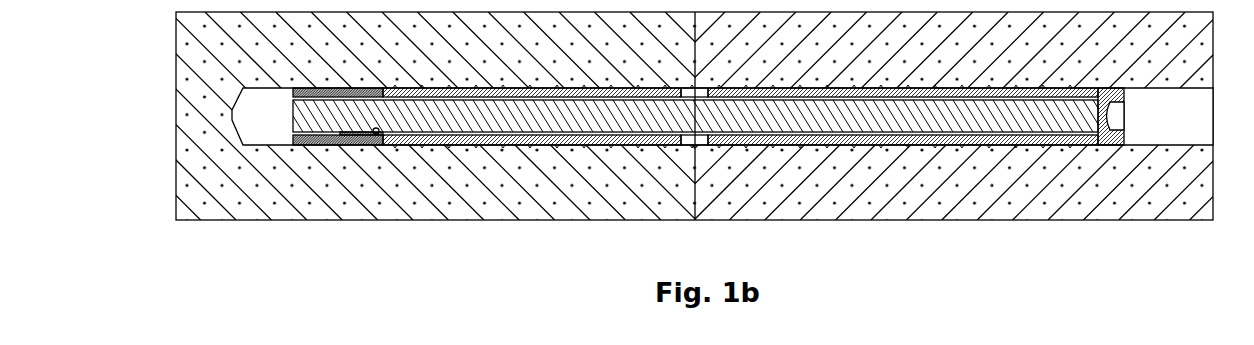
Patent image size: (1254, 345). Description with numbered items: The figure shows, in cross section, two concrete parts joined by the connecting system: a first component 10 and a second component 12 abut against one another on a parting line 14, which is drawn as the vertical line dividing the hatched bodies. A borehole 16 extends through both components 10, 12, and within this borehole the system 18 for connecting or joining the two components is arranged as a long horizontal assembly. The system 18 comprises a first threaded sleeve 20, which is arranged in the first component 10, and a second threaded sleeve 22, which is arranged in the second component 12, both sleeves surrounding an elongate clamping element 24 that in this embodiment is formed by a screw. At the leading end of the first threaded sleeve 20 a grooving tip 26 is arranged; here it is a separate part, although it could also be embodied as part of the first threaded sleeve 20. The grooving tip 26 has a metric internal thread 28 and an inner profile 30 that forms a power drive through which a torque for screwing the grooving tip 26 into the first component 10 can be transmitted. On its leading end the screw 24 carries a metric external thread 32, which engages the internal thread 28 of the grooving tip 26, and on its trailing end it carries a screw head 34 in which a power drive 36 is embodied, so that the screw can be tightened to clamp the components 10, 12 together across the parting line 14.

The first component 10 is at (188, 72).
The second component 12 is at (1212, 184).
The parting line 14 is at (703, 18).
The borehole 16 is at (262, 100).
The system 18 is at (634, 65).
The first threaded sleeve 20 is at (394, 82).
The second threaded sleeve 22 is at (850, 85).
The clamping element 24 is at (928, 118).
The grooving tip 26 is at (333, 80).
The metric internal thread 28 is at (308, 132).
The inner profile 30 is at (374, 135).
The metric external thread 32 is at (330, 136).
The screw head 34 is at (477, 86).
The power drive 36 is at (1129, 115).